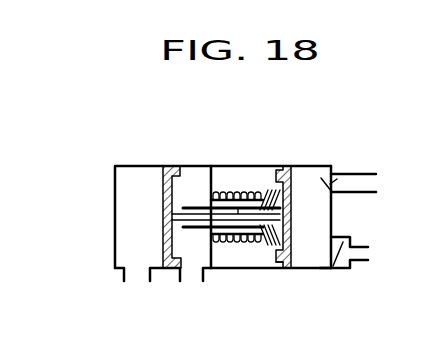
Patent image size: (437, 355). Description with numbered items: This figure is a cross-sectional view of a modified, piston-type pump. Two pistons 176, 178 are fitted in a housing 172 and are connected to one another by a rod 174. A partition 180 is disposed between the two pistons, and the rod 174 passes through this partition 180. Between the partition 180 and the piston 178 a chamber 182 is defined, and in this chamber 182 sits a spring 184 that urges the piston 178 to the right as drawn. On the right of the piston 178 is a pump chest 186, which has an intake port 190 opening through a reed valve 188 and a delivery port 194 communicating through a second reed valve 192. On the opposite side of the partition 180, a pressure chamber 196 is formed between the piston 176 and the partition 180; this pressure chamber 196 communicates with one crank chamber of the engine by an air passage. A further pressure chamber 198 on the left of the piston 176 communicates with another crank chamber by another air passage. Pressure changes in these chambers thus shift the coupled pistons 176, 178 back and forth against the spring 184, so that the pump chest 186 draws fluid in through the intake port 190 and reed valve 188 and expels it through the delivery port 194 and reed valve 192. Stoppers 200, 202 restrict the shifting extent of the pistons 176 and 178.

The housing 172 is at (277, 167).
The rod 174 is at (243, 245).
The piston 176 is at (160, 252).
The piston 178 is at (293, 248).
The partition 180 is at (205, 176).
The chamber 182 is at (265, 245).
The spring 184 is at (233, 188).
The pump chest 186 is at (320, 261).
The reed valve 188 is at (343, 172).
The intake port 190 is at (368, 186).
The reed valve 192 is at (346, 258).
The delivery port 194 is at (367, 255).
The pressure chamber 196 is at (190, 176).
The pressure chamber 198 is at (131, 176).
The stopper 200 is at (197, 229).
The stopper 202 is at (215, 245).